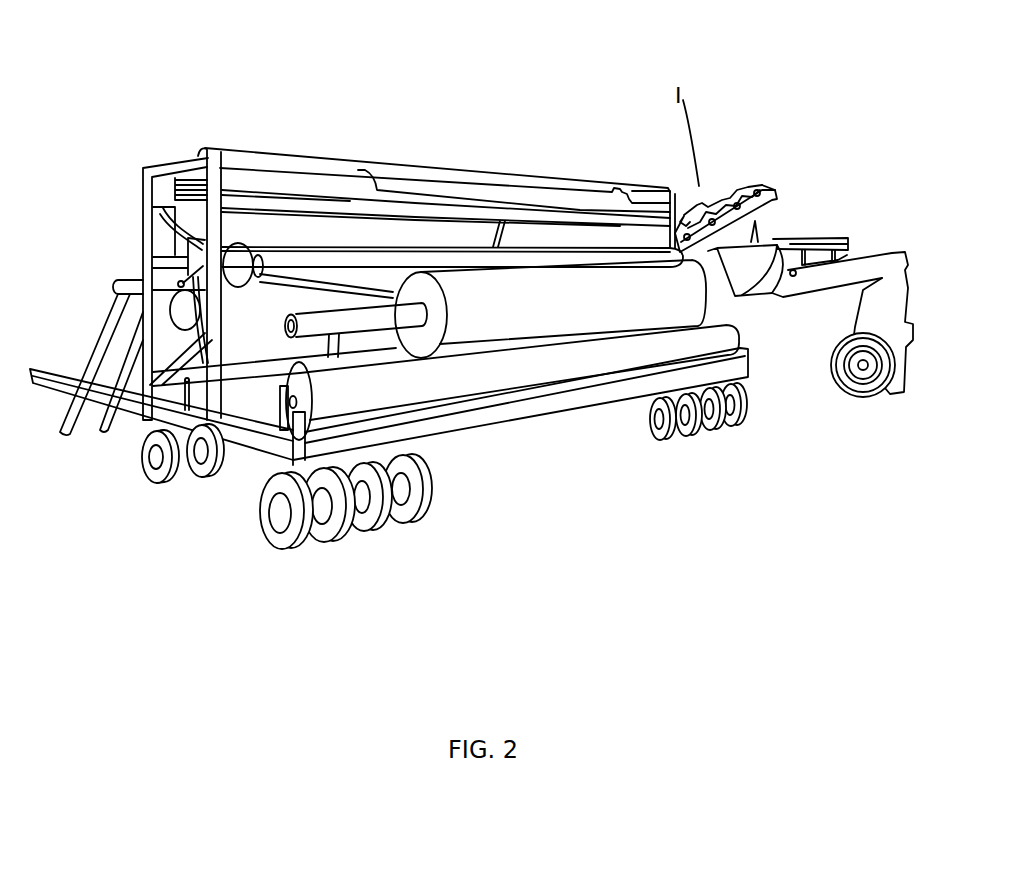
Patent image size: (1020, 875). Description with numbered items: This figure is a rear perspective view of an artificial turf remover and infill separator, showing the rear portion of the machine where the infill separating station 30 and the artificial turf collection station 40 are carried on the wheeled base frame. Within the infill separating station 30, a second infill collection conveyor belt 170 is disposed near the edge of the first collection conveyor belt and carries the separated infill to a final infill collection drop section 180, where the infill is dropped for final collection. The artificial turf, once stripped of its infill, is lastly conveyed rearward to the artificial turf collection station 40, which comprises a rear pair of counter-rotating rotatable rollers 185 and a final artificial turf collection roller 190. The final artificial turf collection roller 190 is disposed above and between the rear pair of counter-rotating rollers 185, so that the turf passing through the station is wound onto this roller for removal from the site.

The infill separating station 30 is at (404, 106).
The artificial turf collection station 40 is at (745, 307).
The second infill collection conveyor belt 170 is at (702, 188).
The final infill collection drop section 180 is at (757, 244).
The rear pair of counter-rotating rotatable rollers 185 is at (290, 367).
The final artificial turf collection roller 190 is at (492, 318).